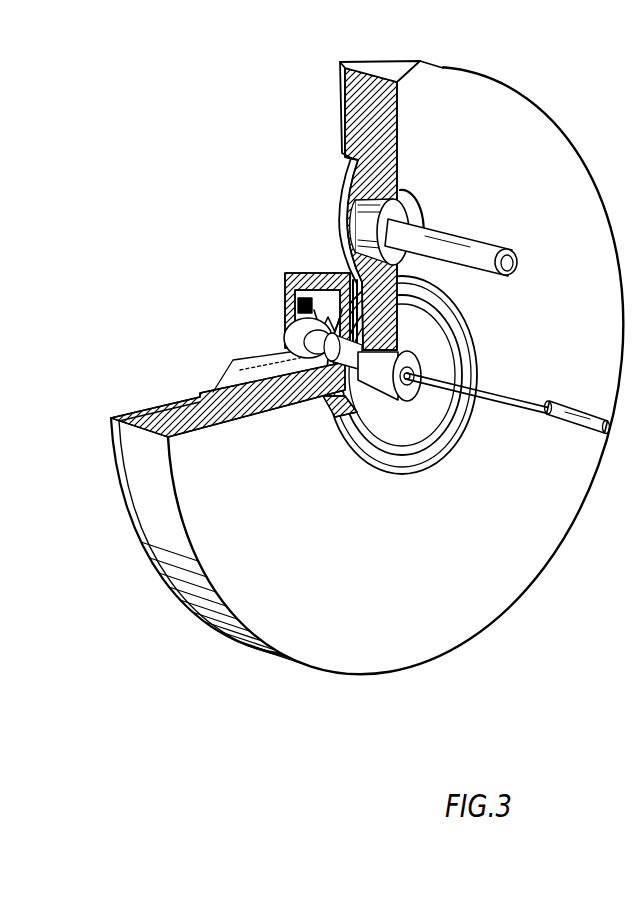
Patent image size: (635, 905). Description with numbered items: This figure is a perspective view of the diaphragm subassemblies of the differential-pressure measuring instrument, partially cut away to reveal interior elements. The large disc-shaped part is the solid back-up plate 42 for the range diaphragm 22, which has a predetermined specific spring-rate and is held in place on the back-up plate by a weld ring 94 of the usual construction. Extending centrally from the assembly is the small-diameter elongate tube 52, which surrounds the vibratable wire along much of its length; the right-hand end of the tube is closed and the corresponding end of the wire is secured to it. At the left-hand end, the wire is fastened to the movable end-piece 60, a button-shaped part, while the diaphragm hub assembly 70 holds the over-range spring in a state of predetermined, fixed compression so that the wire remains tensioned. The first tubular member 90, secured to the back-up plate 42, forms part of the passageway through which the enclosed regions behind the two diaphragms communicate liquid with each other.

The range diaphragm 22 is at (215, 390).
The back-up plate 42 is at (447, 72).
The elongate tube 52 is at (497, 398).
The movable end-piece 60 is at (280, 341).
The diaphragm hub assembly 70 is at (284, 268).
The first tubular member 90 is at (450, 228).
The weld ring 94 is at (340, 90).